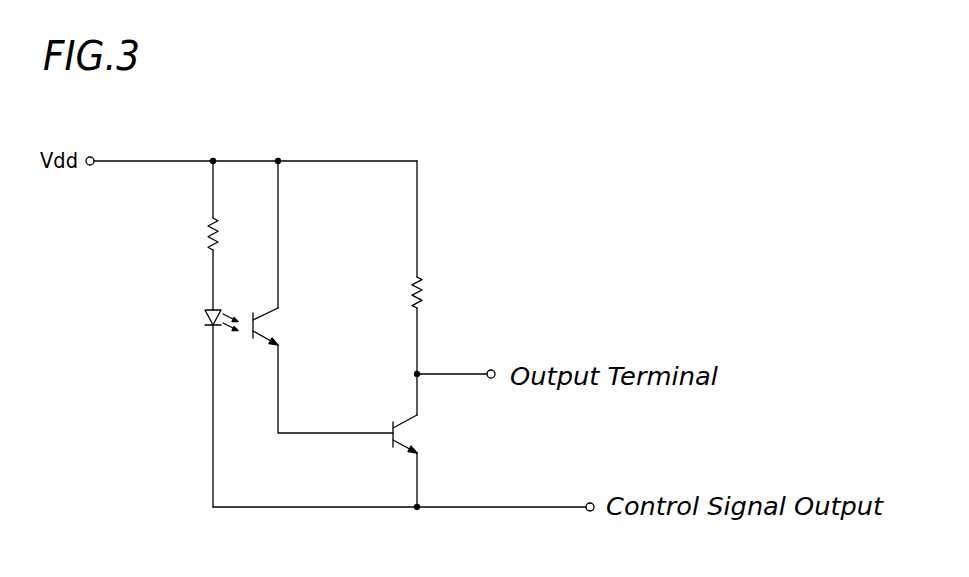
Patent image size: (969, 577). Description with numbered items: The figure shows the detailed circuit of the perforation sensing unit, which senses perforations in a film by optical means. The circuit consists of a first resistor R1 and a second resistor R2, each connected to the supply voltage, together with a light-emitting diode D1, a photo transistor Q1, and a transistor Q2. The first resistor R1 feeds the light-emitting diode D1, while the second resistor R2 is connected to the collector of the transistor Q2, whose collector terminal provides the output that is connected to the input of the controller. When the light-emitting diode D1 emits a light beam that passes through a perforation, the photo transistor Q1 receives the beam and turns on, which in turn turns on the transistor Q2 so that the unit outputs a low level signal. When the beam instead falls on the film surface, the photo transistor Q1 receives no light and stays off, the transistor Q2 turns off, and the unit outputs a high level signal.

The first resistor R1 is at (198, 234).
The light-emitting diode D1 is at (208, 318).
The photo transistor Q1 is at (276, 326).
The second resistor R2 is at (432, 293).
The transistor Q2 is at (416, 434).